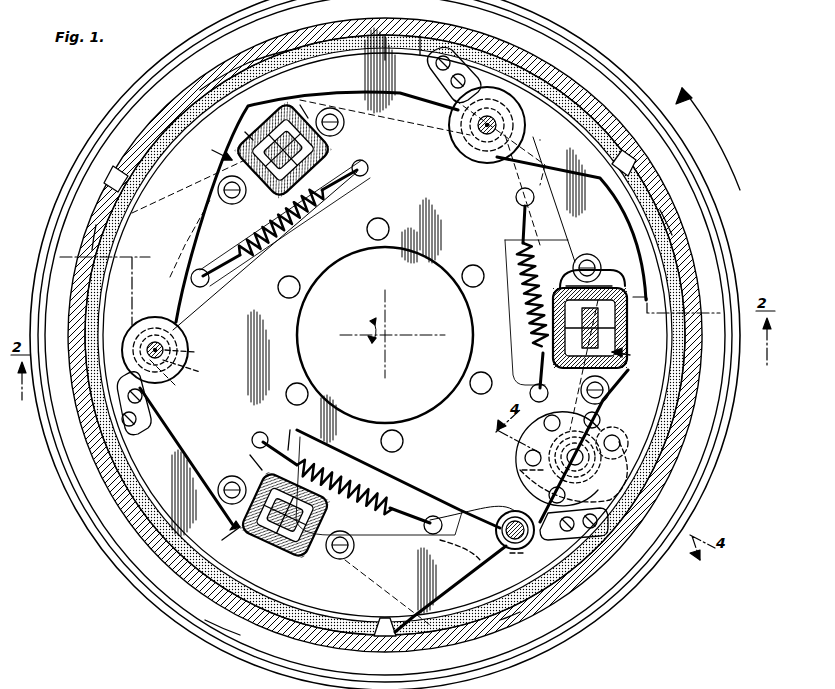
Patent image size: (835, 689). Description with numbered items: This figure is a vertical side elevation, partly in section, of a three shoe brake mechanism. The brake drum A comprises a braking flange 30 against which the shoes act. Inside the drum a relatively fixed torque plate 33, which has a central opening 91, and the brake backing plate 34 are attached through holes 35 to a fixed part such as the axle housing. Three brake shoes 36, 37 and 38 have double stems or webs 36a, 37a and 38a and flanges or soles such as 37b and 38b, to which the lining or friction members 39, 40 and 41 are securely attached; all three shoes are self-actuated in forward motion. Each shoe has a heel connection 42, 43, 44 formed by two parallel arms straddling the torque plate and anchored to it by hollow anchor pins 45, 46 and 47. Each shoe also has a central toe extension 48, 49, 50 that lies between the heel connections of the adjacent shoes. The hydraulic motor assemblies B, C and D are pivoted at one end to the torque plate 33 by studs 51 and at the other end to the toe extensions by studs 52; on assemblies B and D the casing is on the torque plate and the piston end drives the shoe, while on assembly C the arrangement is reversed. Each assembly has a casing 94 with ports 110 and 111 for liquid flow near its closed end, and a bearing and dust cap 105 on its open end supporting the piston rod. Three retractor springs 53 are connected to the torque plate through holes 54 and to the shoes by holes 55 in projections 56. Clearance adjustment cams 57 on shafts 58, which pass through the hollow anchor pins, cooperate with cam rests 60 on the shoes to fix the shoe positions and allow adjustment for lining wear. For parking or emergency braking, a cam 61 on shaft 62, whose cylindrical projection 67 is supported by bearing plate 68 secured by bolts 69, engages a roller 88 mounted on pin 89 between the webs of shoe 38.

The braking flange 30 is at (118, 532).
The torque plate 33 is at (292, 352).
The brake backing plate 34 is at (730, 415).
The holes 35 is at (378, 240).
The brake shoe 36 is at (200, 552).
The double stems or webs 36a is at (85, 475).
The brake shoe 37 is at (235, 80).
The double stems or webs 37a is at (384, 36).
The flange or sole 37b is at (422, 38).
The brake shoe 38 is at (690, 385).
The double stems or webs 38a is at (660, 348).
The flange or sole 38b is at (672, 225).
The lining or friction member 39 is at (242, 612).
The lining or friction member 40 is at (280, 52).
The lining or friction member 41 is at (660, 427).
The heel connection 42 is at (520, 605).
The heel connection 43 is at (93, 250).
The heel connection 44 is at (540, 140).
The hollow anchor pin 45 is at (512, 510).
The hollow anchor pin 46 is at (200, 352).
The hollow anchor pin 47 is at (470, 143).
The toe extension 48 is at (216, 217).
The toe extension 49 is at (576, 233).
The toe extension 50 is at (352, 540).
The stud 51 is at (345, 123).
The stud 52 is at (234, 204).
The retractor spring 53 is at (305, 225).
The holes 54 is at (369, 169).
The holes 55 is at (208, 283).
The projection 56 is at (210, 284).
The clearance adjustment cam 57 is at (186, 336).
The shaft 58 is at (478, 125).
The cam rest 60 is at (138, 430).
The emergency or parking brake cam 61 is at (600, 462).
The shaft 62 is at (522, 472).
The cylindrical projection 67 is at (572, 455).
The bearing plate 68 is at (524, 456).
The bolts 69 is at (526, 456).
The roller 88 is at (625, 440).
The pin 89 is at (620, 445).
The central opening 91 is at (473, 298).
The cylinder or casing 94 is at (270, 122).
The bearing and dust cap 105 is at (245, 132).
The port 110 is at (560, 296).
The port 111 is at (300, 105).
The brake drum A is at (566, 66).
The brake shoe actuating or motor assembly B is at (214, 150).
The brake shoe actuating or motor assembly C is at (631, 353).
The brake shoe actuating or motor assembly D is at (222, 536).